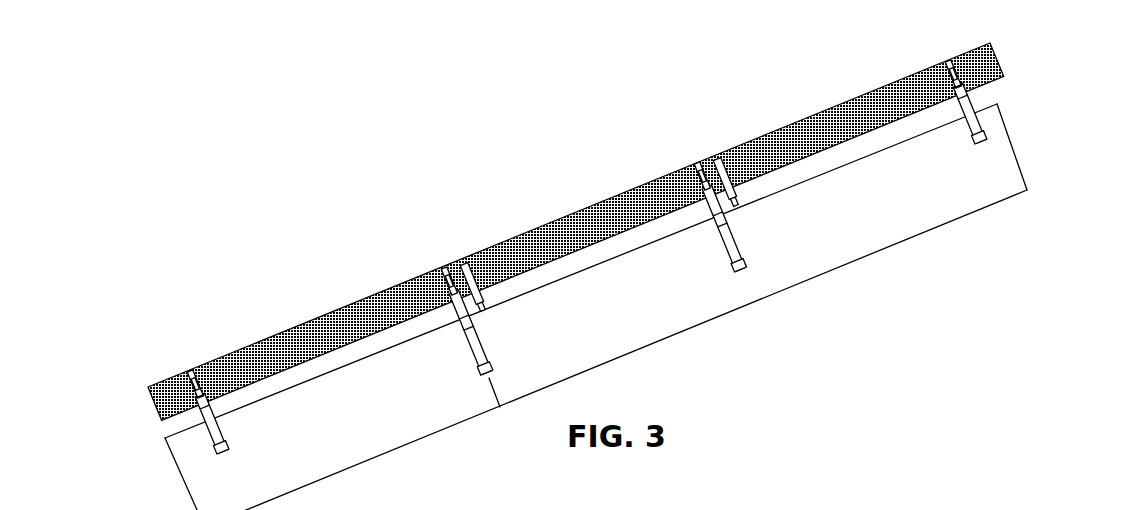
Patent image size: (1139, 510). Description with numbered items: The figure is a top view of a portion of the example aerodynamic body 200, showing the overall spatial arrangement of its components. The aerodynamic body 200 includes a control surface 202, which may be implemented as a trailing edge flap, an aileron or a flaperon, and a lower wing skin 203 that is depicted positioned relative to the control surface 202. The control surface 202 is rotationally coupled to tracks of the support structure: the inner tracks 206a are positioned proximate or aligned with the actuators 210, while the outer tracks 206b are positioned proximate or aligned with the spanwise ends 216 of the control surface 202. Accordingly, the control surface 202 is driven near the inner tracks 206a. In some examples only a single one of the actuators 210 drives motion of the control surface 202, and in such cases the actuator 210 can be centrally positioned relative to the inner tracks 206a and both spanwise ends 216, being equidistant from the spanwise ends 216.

The aerodynamic body 200 is at (622, 276).
The control surface 202 is at (323, 457).
The lower wing skin 203 is at (320, 328).
The inner tracks 206a is at (447, 272).
The outer tracks 206b is at (192, 372).
The actuators 210 is at (484, 316).
The spanwise ends 216 is at (203, 493).